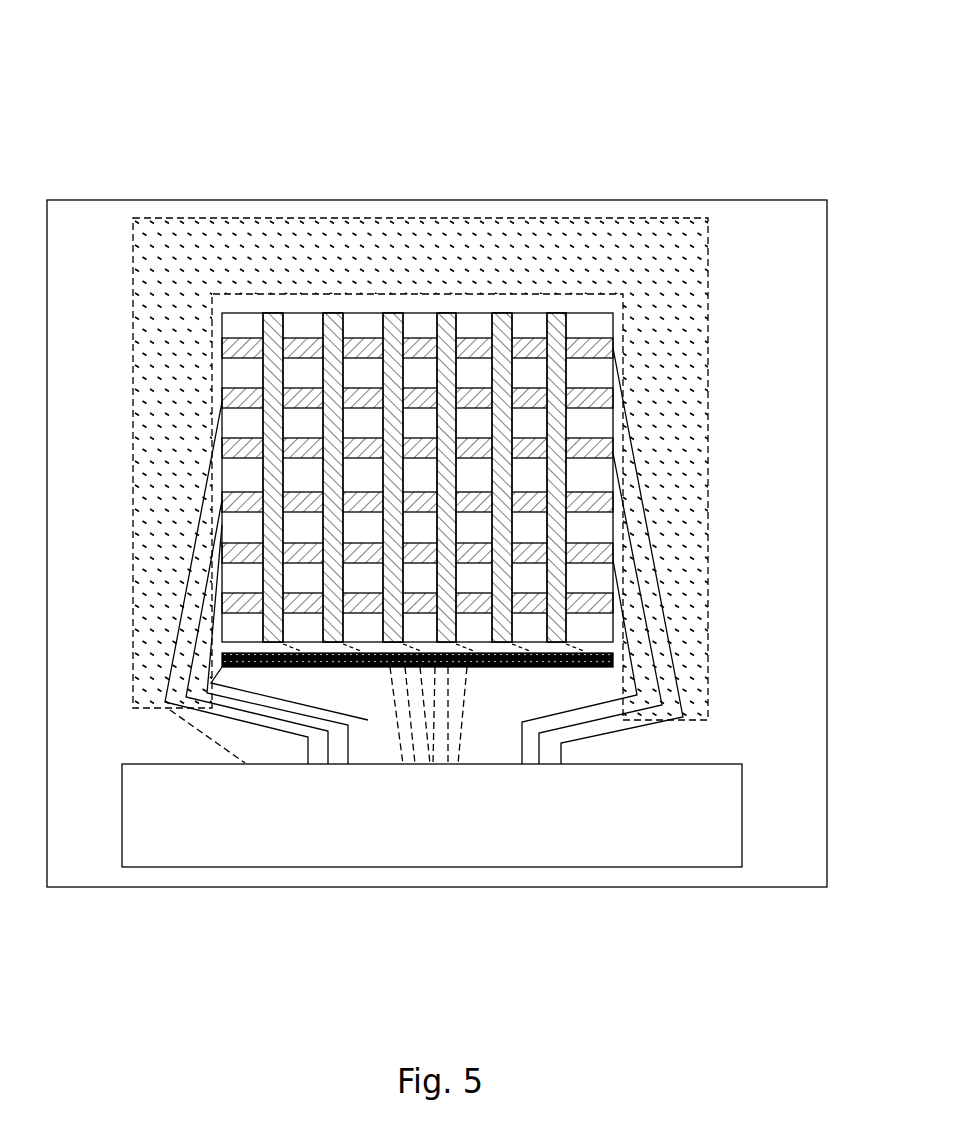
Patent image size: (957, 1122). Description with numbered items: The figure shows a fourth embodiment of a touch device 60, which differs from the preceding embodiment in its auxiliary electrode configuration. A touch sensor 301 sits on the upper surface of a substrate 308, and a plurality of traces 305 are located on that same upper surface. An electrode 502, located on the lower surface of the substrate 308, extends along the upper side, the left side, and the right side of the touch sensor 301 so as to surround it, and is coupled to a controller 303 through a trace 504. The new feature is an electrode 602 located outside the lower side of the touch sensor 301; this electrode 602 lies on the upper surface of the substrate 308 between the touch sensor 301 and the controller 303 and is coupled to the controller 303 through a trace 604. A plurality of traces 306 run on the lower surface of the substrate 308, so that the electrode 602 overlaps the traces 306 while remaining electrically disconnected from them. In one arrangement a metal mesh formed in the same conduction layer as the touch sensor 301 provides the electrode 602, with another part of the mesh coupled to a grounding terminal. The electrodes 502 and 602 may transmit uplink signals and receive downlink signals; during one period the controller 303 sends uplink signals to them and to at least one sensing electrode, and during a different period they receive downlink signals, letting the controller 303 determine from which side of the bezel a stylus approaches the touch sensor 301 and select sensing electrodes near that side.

The touch device 60 is at (768, 117).
The touch sensor 301 is at (531, 313).
The controller 303 is at (723, 823).
The traces 305 is at (348, 764).
The traces 306 is at (428, 760).
The substrate 308 is at (827, 508).
The electrode 502 is at (697, 313).
The trace 504 is at (207, 738).
The electrode 602 is at (562, 667).
The trace 604 is at (368, 720).